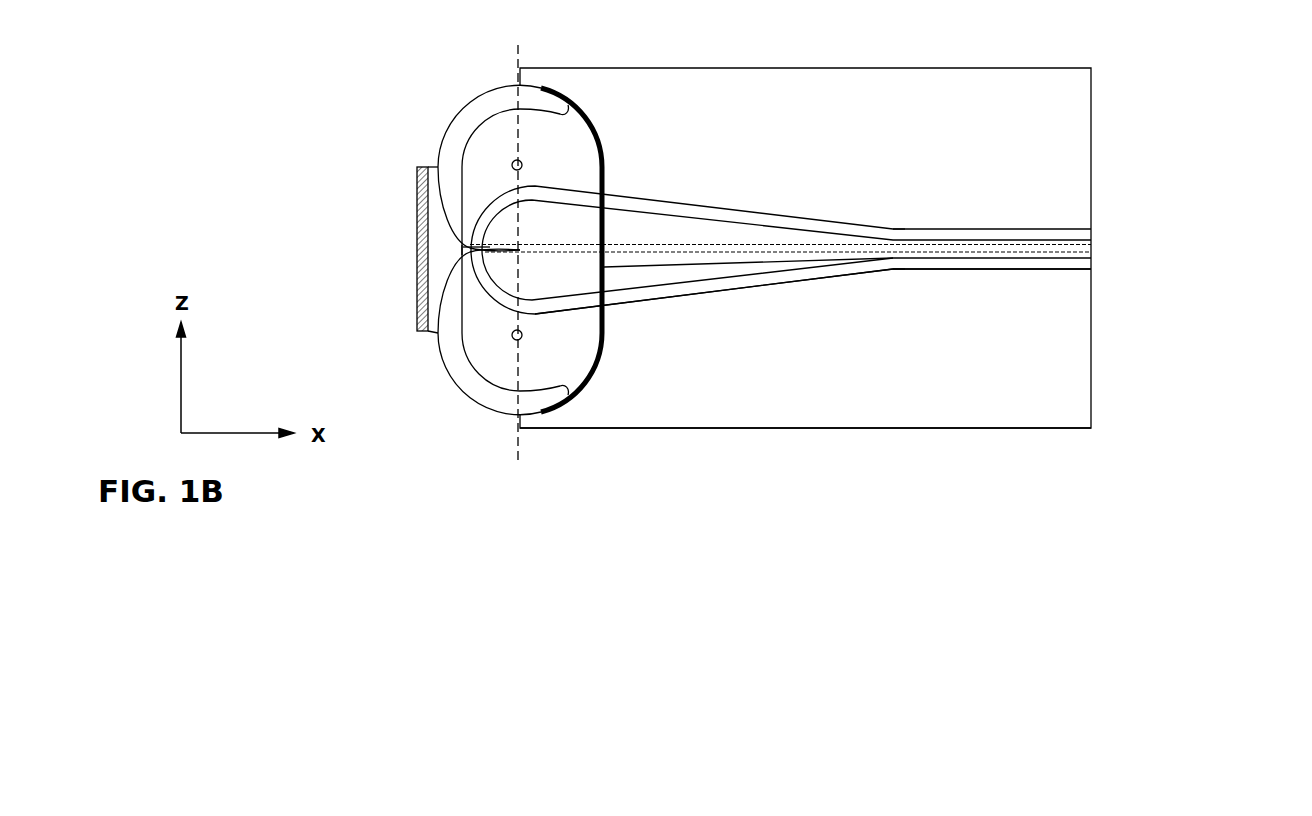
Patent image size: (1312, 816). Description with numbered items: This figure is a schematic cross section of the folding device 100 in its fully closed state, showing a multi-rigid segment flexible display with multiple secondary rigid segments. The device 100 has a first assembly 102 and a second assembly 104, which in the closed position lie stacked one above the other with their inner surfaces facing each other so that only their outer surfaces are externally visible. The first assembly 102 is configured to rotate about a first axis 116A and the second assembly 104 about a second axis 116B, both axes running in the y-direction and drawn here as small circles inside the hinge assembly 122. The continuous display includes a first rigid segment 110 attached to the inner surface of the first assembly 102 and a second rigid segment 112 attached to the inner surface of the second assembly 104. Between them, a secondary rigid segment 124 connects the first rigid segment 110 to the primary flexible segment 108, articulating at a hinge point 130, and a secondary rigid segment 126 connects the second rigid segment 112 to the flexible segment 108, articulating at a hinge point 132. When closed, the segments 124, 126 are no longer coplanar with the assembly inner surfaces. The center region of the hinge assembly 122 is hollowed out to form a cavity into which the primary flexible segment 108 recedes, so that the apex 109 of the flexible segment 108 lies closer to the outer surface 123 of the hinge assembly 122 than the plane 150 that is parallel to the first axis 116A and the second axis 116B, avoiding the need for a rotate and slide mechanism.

The device 100 is at (1228, 108).
The first assembly 102 is at (1083, 148).
The second assembly 104 is at (1082, 328).
The primary flexible segment 108 is at (450, 254).
The apex 109 is at (463, 247).
The first rigid segment 110 is at (1019, 198).
The second rigid segment 112 is at (1016, 292).
The first axis 116A is at (513, 160).
The second axis 116B is at (513, 340).
The hinge assembly 122 is at (430, 207).
The outer surface 123 is at (418, 331).
The rigid segment 124 is at (683, 180).
The rigid segment 126 is at (688, 325).
The hinge point 130 is at (906, 207).
The hinge point 132 is at (910, 297).
The plane 150 is at (517, 68).